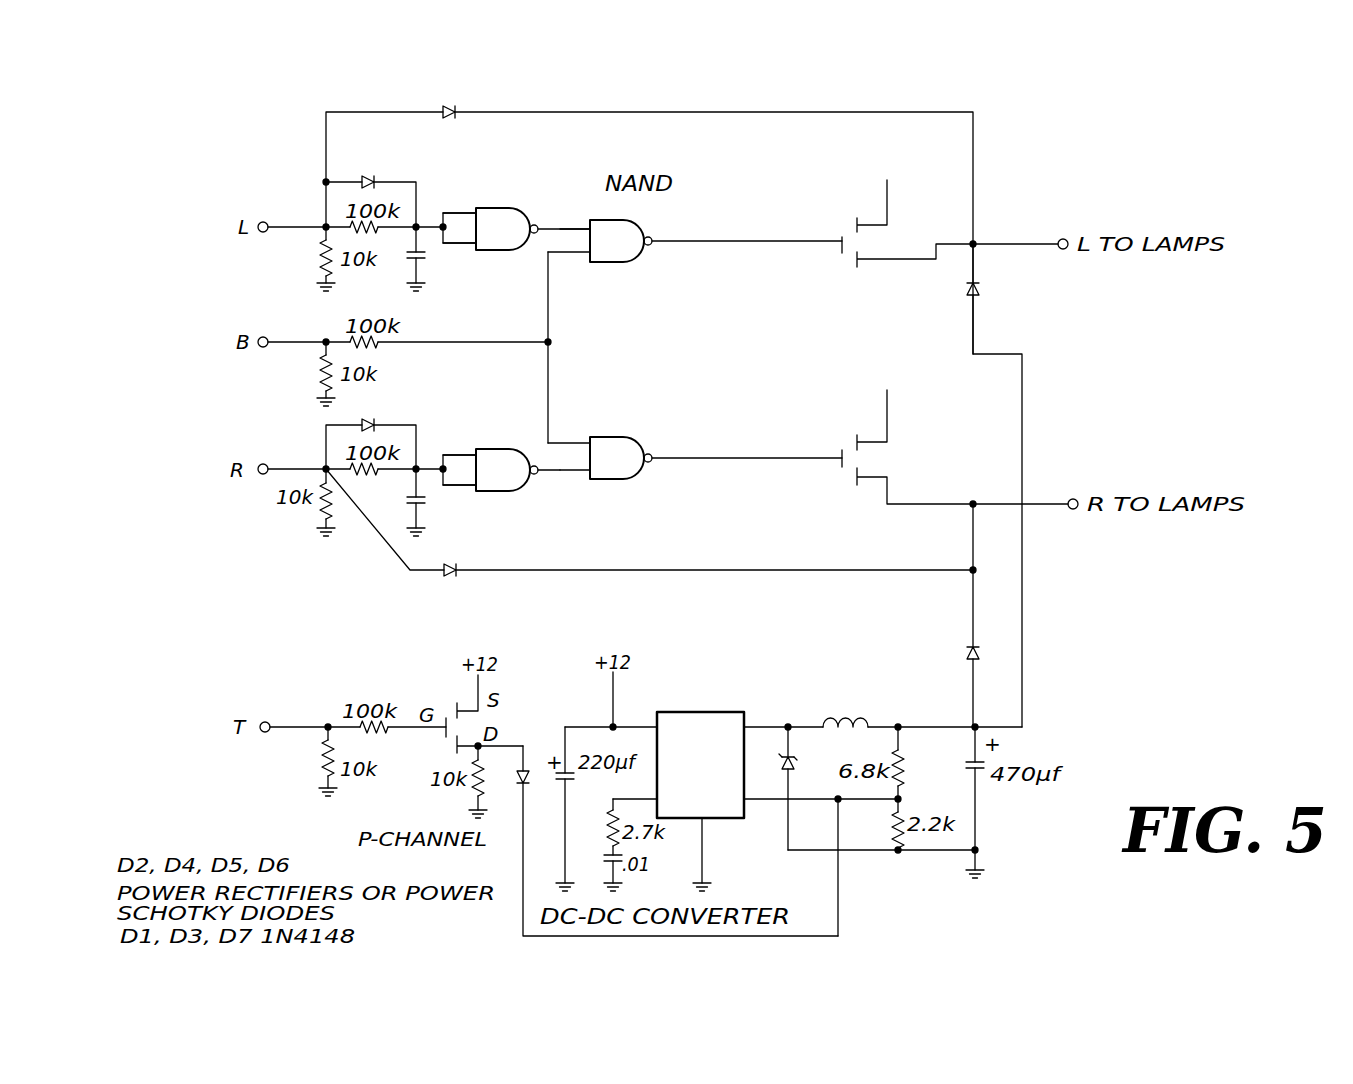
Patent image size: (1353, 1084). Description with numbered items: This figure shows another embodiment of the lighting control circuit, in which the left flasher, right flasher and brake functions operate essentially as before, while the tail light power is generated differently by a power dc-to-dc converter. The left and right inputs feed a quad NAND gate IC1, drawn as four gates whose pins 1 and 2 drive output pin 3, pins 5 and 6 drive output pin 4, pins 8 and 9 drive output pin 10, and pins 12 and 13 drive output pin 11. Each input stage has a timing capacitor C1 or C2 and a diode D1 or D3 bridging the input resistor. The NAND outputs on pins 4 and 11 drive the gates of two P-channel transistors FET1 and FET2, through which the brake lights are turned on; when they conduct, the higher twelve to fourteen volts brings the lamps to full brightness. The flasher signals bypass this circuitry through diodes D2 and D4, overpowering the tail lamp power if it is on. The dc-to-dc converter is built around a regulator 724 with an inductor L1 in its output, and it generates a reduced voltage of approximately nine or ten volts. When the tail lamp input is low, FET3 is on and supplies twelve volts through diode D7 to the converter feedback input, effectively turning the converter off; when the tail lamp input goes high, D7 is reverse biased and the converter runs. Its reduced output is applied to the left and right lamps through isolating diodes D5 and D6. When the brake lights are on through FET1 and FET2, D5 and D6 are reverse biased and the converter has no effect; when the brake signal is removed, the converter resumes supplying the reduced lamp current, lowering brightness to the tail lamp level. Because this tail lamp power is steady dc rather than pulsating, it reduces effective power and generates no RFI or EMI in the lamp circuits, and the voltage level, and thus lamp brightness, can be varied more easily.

The IC1 NAND gate pin 1 is at (459, 200).
The IC1 NAND gate pin 2 is at (459, 257).
The IC1 NAND gate pin 3 output 3 is at (561, 214).
The IC1 NAND gate pin 4 output 4 is at (747, 230).
The IC1 NAND gate pin 5 is at (575, 214).
The IC1 NAND gate pin 6 is at (569, 263).
The IC1 NAND gate pin 8 is at (459, 442).
The IC1 NAND gate pin 9 is at (459, 498).
The IC1 NAND gate pin 10 output 10 is at (548, 456).
The IC1 NAND gate pin 11 output 11 is at (747, 443).
The IC1 NAND gate pin 12 is at (573, 483).
The IC1 NAND gate pin 13 is at (569, 429).
The quad NAND gate integrated circuit IC1 is at (547, 349).
The capacitor C1 is at (428, 259).
The capacitor C2 is at (429, 502).
The diode 1N4148 D1 is at (369, 190).
The diode D2 is at (674, 405).
The diode 1N4148 D3 is at (371, 433).
The diode D4 is at (651, 522).
The isolating diode D5 is at (995, 299).
The isolating diode D6 is at (951, 615).
The diode D7 is at (677, 841).
The FET FET1 is at (875, 241).
The FET FET2 is at (869, 451).
The inductor L1 is at (845, 705).
The DC-DC converter regulator IC 724 is at (700, 765).